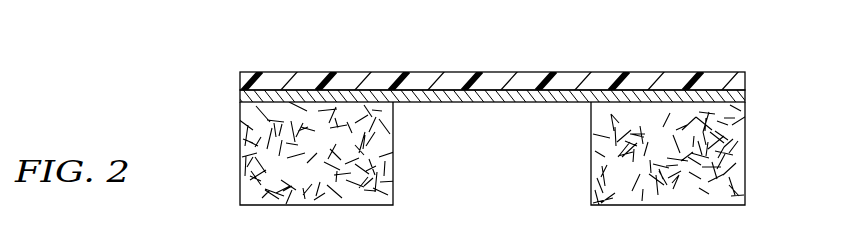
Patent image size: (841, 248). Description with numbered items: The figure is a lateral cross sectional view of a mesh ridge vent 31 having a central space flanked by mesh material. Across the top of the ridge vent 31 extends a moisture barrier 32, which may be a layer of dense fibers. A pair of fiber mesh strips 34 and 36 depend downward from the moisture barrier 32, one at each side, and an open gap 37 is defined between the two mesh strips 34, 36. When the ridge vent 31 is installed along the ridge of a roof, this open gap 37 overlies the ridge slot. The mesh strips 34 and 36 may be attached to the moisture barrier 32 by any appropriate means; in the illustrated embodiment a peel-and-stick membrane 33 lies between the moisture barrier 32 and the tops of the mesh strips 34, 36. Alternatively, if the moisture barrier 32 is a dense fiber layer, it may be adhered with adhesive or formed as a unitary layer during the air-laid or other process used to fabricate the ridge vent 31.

The ridge vent 31 is at (203, 61).
The moisture barrier 32 is at (651, 72).
The peel-and-stick membrane 33 is at (727, 96).
The fiber mesh strip 34 is at (732, 137).
The fiber mesh strip 36 is at (247, 134).
The open gap 37 is at (493, 165).